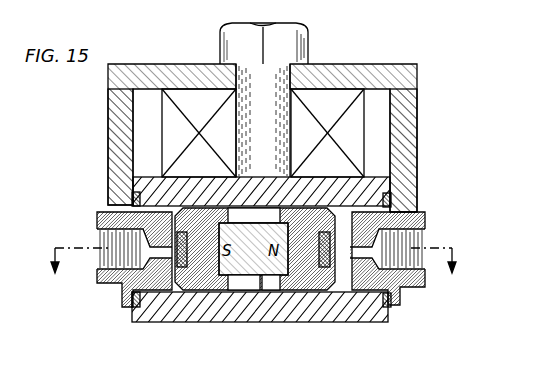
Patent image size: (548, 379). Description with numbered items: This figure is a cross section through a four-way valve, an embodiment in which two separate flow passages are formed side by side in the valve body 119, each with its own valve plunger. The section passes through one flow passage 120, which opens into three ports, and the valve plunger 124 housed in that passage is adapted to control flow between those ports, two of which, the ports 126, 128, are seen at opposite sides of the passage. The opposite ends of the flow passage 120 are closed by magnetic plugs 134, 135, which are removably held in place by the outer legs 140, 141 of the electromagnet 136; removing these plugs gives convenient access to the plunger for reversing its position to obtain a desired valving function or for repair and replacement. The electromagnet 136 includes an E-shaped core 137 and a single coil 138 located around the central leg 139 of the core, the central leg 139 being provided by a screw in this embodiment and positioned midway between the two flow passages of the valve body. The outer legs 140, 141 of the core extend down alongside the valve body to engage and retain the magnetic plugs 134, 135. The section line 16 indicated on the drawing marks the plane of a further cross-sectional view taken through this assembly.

The section line 16- 16 is at (251, 273).
The valve body 119 is at (166, 317).
The flow passage 120 is at (340, 291).
The valve plunger 124 is at (258, 288).
The port 126 is at (165, 259).
The port 128 is at (355, 259).
The magnetic plug 134 is at (387, 256).
The magnetic plug 135 is at (133, 259).
The electromagnet 136 is at (161, 100).
The E-shaped core 137 is at (334, 74).
The coil 138 is at (356, 135).
The central leg 139 is at (275, 133).
The outer leg 140 is at (410, 155).
The outer leg 141 is at (118, 153).